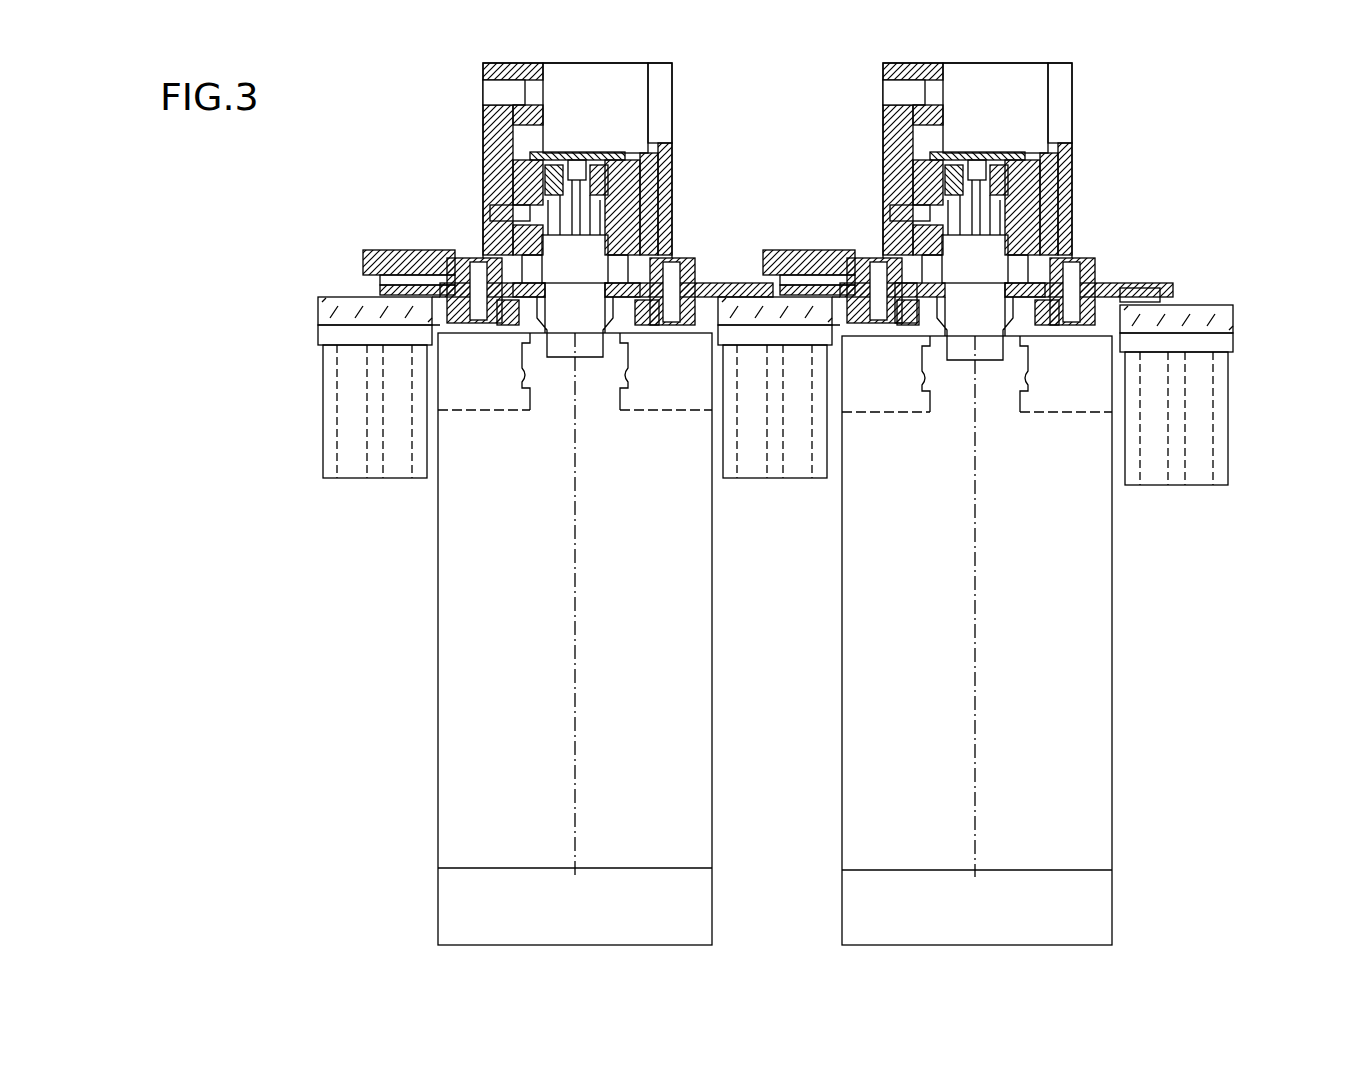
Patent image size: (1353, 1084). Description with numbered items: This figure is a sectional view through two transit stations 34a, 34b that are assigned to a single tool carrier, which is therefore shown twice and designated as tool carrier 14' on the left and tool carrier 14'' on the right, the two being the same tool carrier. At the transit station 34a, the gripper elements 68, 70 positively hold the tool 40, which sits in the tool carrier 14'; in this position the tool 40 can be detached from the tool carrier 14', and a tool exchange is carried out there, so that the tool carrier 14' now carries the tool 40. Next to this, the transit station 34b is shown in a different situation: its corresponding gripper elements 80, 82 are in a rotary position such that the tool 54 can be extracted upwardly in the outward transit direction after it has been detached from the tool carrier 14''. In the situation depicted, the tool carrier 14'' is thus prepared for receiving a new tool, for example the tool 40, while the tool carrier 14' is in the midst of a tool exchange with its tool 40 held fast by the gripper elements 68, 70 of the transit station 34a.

The tool carrier 14' is at (527, 639).
The tool carrier 14'' is at (1038, 640).
The transit station 34a is at (724, 256).
The transit station 34b is at (1160, 250).
The tool 40 is at (580, 305).
The tool 54 is at (986, 303).
The gripper element 68 is at (527, 291).
The gripper element 70 is at (636, 290).
The gripper element 80 is at (910, 330).
The gripper element 82 is at (1040, 285).